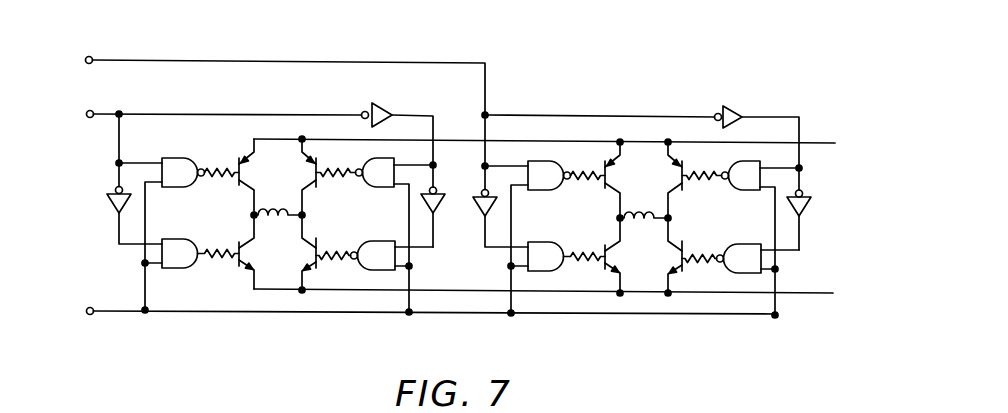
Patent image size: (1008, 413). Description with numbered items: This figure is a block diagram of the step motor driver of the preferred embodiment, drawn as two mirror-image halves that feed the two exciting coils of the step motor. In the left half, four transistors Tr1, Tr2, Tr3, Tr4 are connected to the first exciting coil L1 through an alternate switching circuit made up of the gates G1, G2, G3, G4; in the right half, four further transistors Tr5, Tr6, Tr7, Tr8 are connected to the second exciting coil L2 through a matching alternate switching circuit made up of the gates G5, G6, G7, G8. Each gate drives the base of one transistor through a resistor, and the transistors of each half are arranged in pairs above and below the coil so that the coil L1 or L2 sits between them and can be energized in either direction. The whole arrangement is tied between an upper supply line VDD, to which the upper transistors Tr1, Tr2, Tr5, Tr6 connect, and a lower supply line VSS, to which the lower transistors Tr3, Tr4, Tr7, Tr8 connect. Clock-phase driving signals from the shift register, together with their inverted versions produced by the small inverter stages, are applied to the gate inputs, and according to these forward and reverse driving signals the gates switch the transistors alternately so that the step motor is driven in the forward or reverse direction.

The positive supply voltage line VDD is at (564, 145).
The negative supply voltage line VSS is at (562, 295).
The gate G1 is at (200, 173).
The gate G2 is at (374, 173).
The gate G3 is at (200, 254).
The gate G4 is at (374, 256).
The gate G5 is at (566, 176).
The gate G6 is at (740, 176).
The gate G7 is at (566, 257).
The gate G8 is at (740, 259).
The transistor Tr1 is at (232, 177).
The transistor Tr2 is at (331, 177).
The transistor Tr3 is at (235, 253).
The transistor Tr4 is at (324, 253).
The transistor Tr5 is at (598, 180).
The transistor Tr6 is at (697, 180).
The transistor Tr7 is at (601, 256).
The transistor Tr8 is at (690, 256).
The exciting coil L1 is at (278, 230).
The exciting coil L2 is at (644, 233).